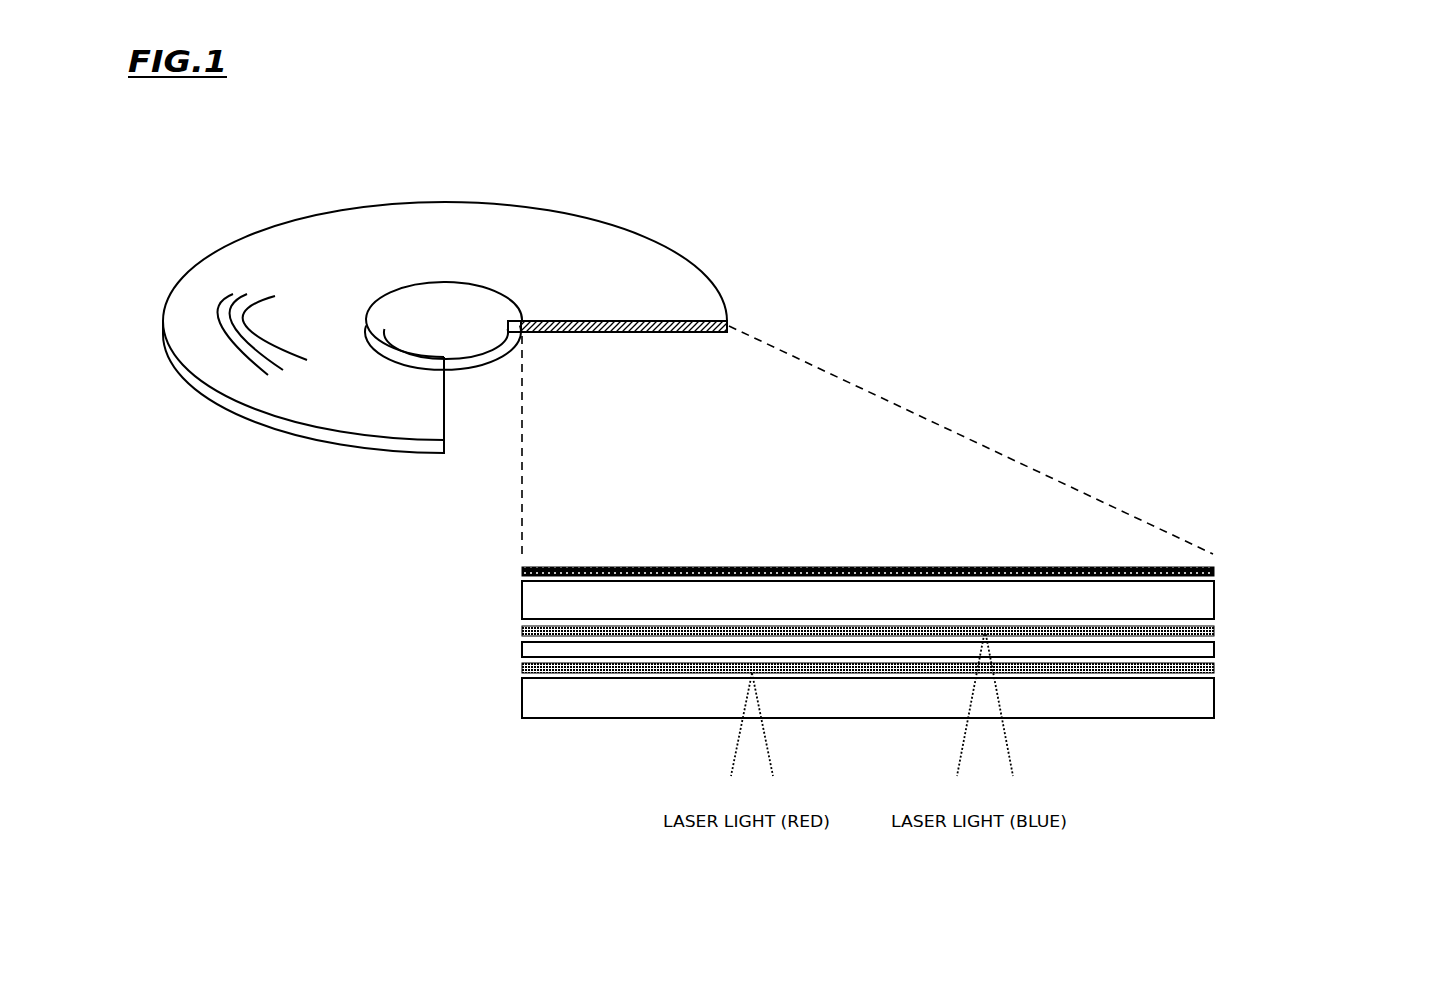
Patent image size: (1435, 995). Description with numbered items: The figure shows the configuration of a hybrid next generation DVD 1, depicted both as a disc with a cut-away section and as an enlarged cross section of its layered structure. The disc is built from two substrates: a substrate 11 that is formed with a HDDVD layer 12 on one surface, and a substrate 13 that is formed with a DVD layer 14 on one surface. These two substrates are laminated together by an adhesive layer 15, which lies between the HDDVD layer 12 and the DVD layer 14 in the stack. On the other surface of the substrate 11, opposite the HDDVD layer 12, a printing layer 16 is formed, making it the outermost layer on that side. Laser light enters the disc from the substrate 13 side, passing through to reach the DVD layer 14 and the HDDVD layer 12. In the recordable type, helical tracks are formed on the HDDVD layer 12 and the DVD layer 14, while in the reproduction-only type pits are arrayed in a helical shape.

The hybrid next generation DVD 1 is at (633, 268).
The substrate 11 is at (1216, 599).
The HDDVD layer 12 is at (520, 631).
The substrate 13 is at (1216, 698).
The DVD layer 14 is at (520, 668).
The adhesive layer 15 is at (1216, 648).
The printing layer 16 is at (996, 527).